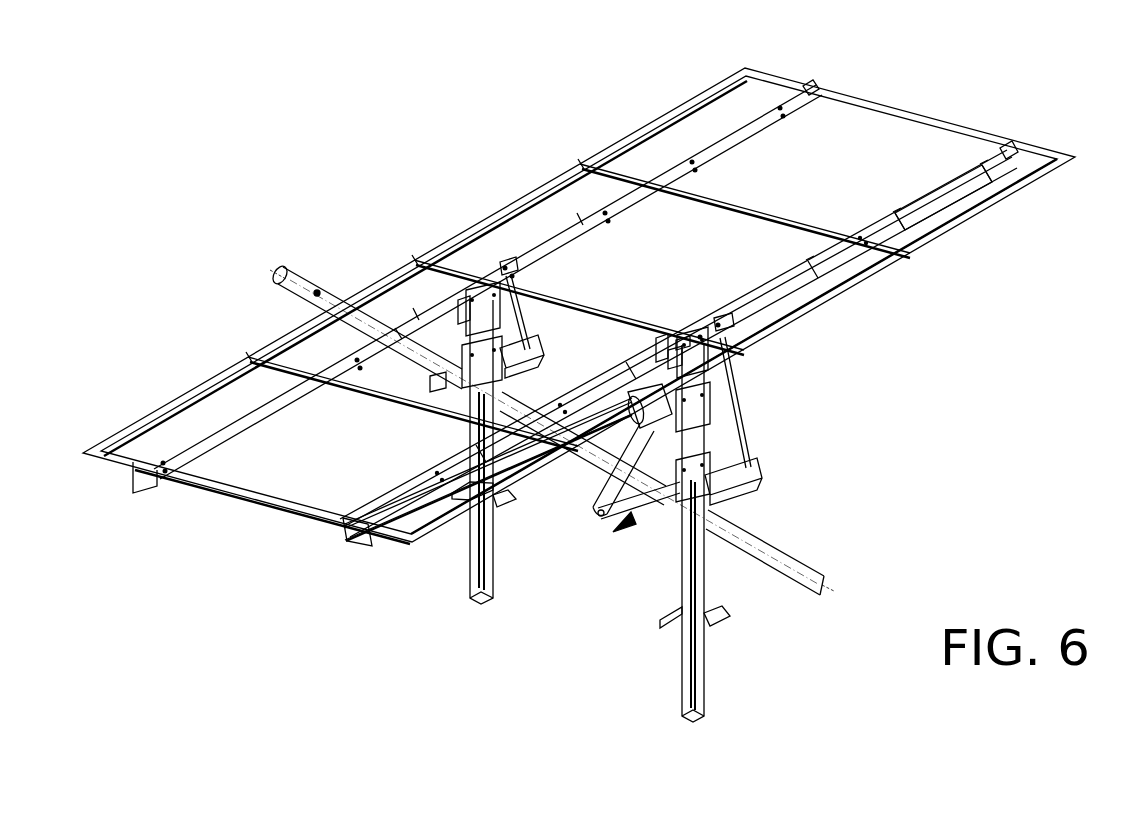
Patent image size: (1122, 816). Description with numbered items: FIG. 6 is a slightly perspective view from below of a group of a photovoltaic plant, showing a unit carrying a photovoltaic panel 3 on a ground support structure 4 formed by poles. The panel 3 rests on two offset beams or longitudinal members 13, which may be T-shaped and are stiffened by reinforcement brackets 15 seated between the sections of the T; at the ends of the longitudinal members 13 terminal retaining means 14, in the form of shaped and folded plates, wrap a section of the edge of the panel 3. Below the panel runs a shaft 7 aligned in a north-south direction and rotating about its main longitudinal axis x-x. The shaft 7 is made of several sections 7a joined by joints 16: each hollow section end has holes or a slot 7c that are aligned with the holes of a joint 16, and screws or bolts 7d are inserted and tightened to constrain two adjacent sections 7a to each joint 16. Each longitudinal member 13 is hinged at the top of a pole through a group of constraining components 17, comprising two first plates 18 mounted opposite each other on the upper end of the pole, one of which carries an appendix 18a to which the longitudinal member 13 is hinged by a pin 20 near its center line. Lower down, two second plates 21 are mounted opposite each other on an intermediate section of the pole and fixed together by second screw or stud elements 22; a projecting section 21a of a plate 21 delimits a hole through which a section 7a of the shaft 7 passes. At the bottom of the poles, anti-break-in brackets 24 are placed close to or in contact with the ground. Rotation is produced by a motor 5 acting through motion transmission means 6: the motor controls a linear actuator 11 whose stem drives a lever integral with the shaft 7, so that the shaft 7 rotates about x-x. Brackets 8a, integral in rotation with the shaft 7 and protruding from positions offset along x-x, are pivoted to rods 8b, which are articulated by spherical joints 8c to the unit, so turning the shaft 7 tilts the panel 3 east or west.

The photovoltaic panel 3 is at (893, 128).
The support structure 4 is at (707, 562).
The motor 5 is at (660, 412).
The motion transmission means 6 is at (618, 532).
The shaft 7 is at (352, 312).
The section 7a is at (395, 332).
The holes or slot 7c is at (815, 575).
The screws or bolts 7d is at (297, 272).
The brackets 8a is at (523, 377).
The rods 8b is at (520, 300).
The spherical joints 8c is at (508, 266).
The actuator 11 is at (648, 447).
The longitudinal members 13 is at (732, 140).
The terminal retaining means 14 is at (808, 85).
The reinforcement brackets 15 is at (975, 190).
The joints 16 is at (317, 289).
The group of constraining components 17 is at (497, 310).
The first plates 18 is at (676, 340).
The appendix 18a is at (683, 336).
The pin 20 is at (466, 296).
The second plates 21 is at (347, 527).
The projecting section 21a is at (437, 383).
The second screw or stud elements 22 is at (527, 480).
The anti-break-in brackets 24 is at (717, 627).